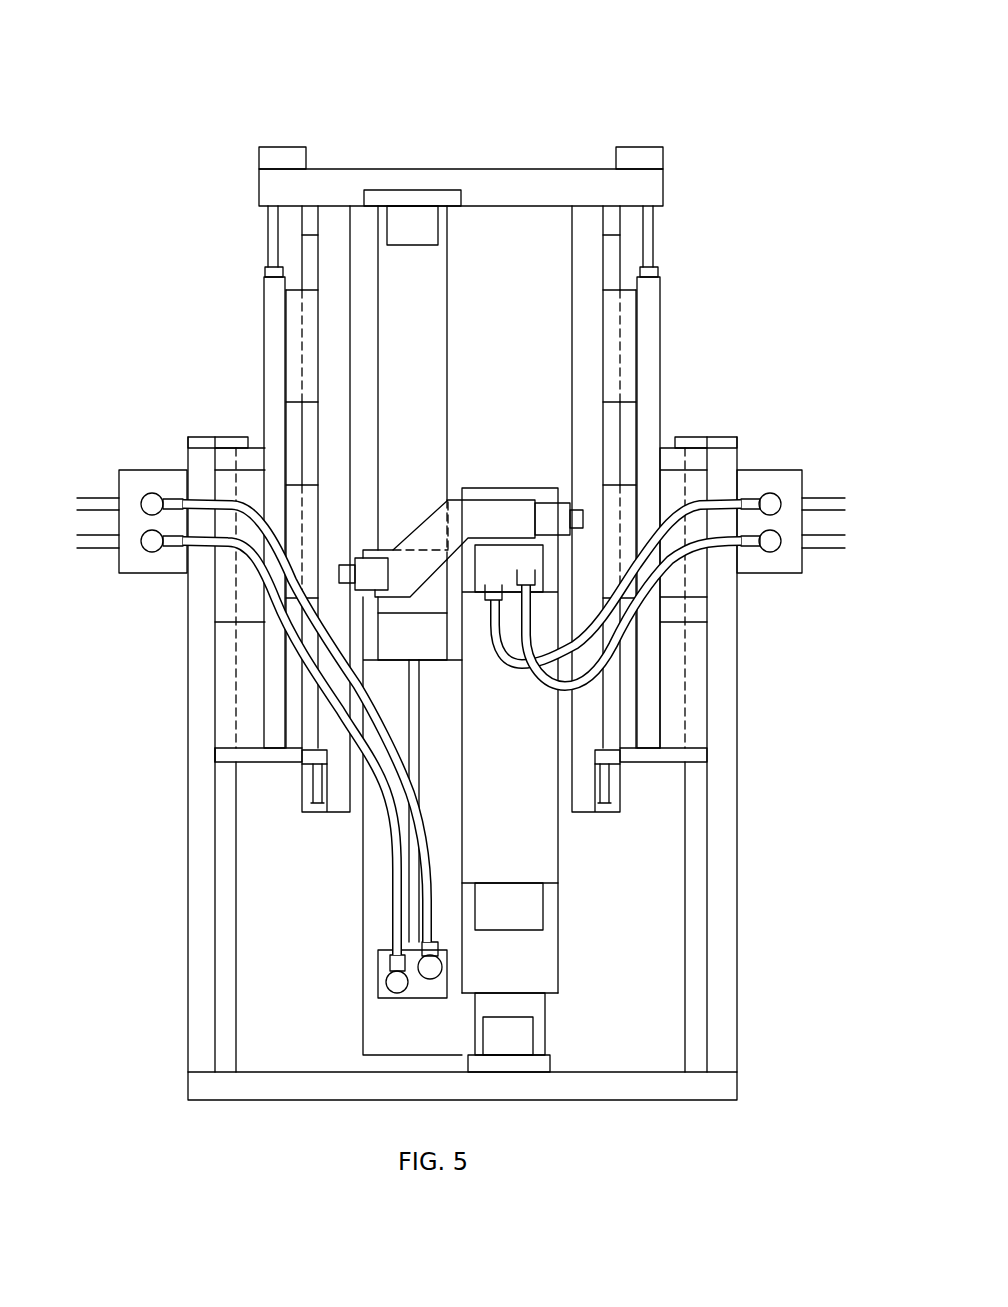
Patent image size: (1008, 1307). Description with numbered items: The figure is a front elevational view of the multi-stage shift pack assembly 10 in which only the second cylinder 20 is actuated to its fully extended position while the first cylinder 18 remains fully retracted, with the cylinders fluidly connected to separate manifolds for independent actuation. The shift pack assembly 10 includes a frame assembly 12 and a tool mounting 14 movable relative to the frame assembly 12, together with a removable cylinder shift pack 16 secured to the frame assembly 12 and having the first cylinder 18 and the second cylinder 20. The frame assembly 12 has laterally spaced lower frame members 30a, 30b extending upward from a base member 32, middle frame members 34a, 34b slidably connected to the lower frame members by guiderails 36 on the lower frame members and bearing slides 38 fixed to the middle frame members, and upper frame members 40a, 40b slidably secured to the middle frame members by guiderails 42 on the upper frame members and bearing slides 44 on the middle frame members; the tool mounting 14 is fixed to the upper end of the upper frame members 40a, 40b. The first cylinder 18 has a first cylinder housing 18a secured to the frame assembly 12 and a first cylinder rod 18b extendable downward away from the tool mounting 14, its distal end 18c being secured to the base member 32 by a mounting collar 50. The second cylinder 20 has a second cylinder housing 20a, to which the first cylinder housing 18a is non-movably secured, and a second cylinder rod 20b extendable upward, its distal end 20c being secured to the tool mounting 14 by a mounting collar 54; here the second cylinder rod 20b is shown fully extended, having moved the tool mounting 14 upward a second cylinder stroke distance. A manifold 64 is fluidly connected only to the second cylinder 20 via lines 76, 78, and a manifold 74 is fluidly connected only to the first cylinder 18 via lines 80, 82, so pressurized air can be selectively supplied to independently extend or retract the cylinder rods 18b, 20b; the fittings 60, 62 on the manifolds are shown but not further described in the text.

The multi-stage shift pack assembly 10 is at (290, 55).
The frame assembly 12 is at (760, 743).
The tool mounting 14 is at (690, 190).
The removable cylinder shift pack 16 is at (352, 922).
The first cylinder 18 is at (565, 938).
The first cylinder housing 18a is at (545, 965).
The first cylinder rod 18b is at (537, 1008).
The distal end of the first cylinder rod 18c is at (545, 1042).
The second cylinder 20 is at (352, 978).
The second cylinder housing 20a is at (377, 840).
The second cylinder rod 20b is at (424, 364).
The distal end of the second cylinder rod 20c is at (447, 226).
The lower frame member 30a is at (198, 924).
The lower frame member 30b is at (725, 933).
The base member 32 is at (292, 1087).
The middle frame member 34a is at (272, 382).
The middle frame member 34b is at (651, 382).
The guiderails 36 is at (223, 967).
The bearing slides 38 is at (226, 483).
The upper frame member 40a is at (338, 220).
The upper frame member 40b is at (592, 220).
The guiderails 42 is at (308, 252).
The bearing slides 44 is at (292, 330).
The mounting collar 50 is at (537, 1065).
The mounting collar 54 is at (412, 200).
The fluid line 60 is at (100, 497).
The fluid line 62 is at (100, 550).
The manifold 64 is at (770, 575).
The manifold 74 is at (152, 575).
The line 76 is at (553, 650).
The line 78 is at (500, 643).
The line 80 is at (382, 782).
The line 82 is at (378, 722).